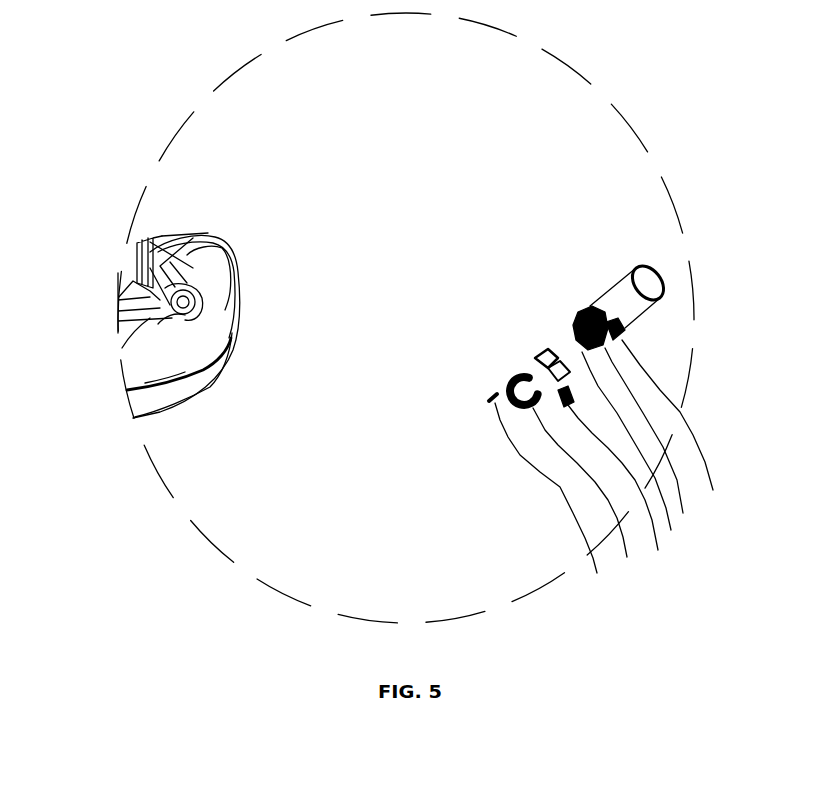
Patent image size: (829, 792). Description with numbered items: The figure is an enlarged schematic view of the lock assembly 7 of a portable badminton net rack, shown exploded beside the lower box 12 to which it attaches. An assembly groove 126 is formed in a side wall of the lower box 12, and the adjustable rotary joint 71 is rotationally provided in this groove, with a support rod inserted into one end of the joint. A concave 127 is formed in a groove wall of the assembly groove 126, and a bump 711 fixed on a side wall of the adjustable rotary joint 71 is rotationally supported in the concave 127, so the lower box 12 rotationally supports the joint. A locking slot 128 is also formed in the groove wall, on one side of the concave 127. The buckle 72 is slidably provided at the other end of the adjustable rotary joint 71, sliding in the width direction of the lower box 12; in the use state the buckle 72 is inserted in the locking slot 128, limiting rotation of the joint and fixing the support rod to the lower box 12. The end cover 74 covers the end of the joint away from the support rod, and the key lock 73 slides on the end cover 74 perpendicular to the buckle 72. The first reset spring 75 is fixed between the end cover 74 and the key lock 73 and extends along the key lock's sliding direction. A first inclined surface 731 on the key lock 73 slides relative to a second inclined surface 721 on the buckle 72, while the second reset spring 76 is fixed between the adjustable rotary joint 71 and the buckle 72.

The lower box 12 is at (140, 407).
The assembly groove 126 is at (140, 244).
The concave 127 is at (118, 300).
The locking slot 128 is at (158, 324).
The lock assembly 7 is at (590, 607).
The adjustable rotary joint 71 is at (680, 431).
The buckle 72 is at (657, 442).
The key lock 73 is at (614, 479).
The end cover 74 is at (588, 495).
The first reset spring 75 is at (635, 452).
The second reset spring 76 is at (551, 493).
The bump 711 is at (622, 322).
The second inclined surface 721 is at (565, 317).
The first inclined surface 731 is at (540, 323).